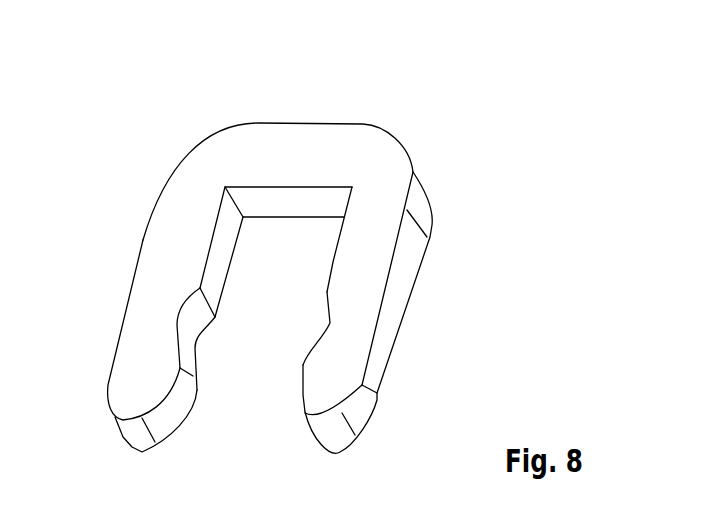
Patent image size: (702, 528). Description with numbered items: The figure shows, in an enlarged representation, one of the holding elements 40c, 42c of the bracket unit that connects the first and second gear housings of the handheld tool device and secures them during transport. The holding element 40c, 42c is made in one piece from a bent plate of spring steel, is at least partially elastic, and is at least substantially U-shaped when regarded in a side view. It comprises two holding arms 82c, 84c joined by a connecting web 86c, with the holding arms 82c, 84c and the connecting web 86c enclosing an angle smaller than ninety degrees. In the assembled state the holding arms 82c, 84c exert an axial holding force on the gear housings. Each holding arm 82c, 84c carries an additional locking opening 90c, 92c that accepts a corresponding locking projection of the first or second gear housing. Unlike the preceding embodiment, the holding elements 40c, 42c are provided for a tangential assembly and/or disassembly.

The holding element 40c is at (315, 248).
The holding element 42c is at (255, 248).
The holding arm 82c is at (157, 319).
The holding arm 84c is at (361, 312).
The connecting web 86c is at (312, 140).
The locking opening 90c is at (187, 343).
The locking opening 92c is at (326, 326).